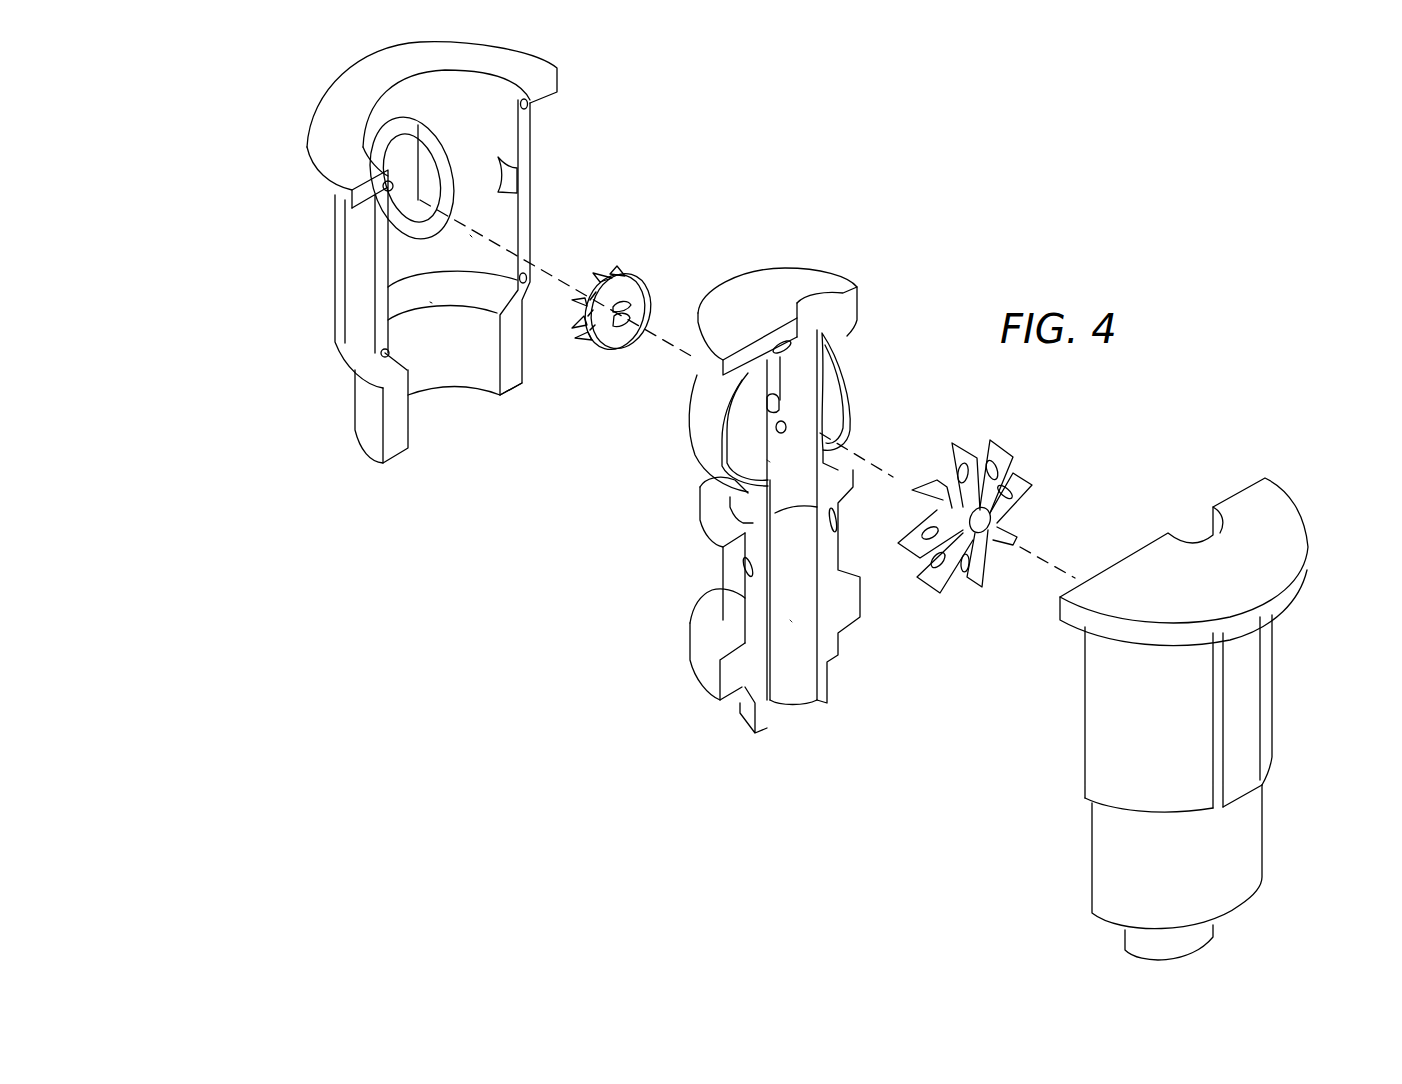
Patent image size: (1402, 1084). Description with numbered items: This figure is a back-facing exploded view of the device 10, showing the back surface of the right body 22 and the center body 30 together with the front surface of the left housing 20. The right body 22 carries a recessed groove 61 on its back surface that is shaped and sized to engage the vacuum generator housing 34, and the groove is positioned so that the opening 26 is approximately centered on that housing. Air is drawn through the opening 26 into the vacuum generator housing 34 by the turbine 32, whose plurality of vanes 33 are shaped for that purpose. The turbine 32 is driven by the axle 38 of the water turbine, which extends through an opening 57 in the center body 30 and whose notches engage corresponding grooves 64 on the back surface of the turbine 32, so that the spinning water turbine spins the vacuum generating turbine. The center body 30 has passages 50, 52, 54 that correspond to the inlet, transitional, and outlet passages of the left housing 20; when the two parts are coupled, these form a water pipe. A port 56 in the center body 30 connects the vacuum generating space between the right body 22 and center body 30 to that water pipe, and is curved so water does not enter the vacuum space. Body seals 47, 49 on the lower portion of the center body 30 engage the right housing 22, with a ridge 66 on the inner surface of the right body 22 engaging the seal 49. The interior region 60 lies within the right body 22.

The device 10 is at (1187, 411).
The left housing 20 is at (1275, 668).
The right housing 22 is at (306, 82).
The opening 26 is at (400, 174).
The center body 30 is at (726, 735).
The turbine 32 is at (650, 292).
The vanes 33 is at (618, 270).
The vacuum generator housing 34 is at (690, 345).
The axle 38 is at (1000, 455).
The body seal 47 is at (710, 607).
The body seal 49 is at (711, 503).
The upper passage 50 is at (810, 403).
The middle passage 52 is at (788, 476).
The lower passage 54 is at (793, 602).
The port 56 is at (786, 425).
The opening 57 is at (775, 403).
The interior cavity 60 is at (497, 222).
The recessed groove 61 is at (425, 175).
The grooves 64 is at (625, 315).
The ridge 66 is at (415, 298).